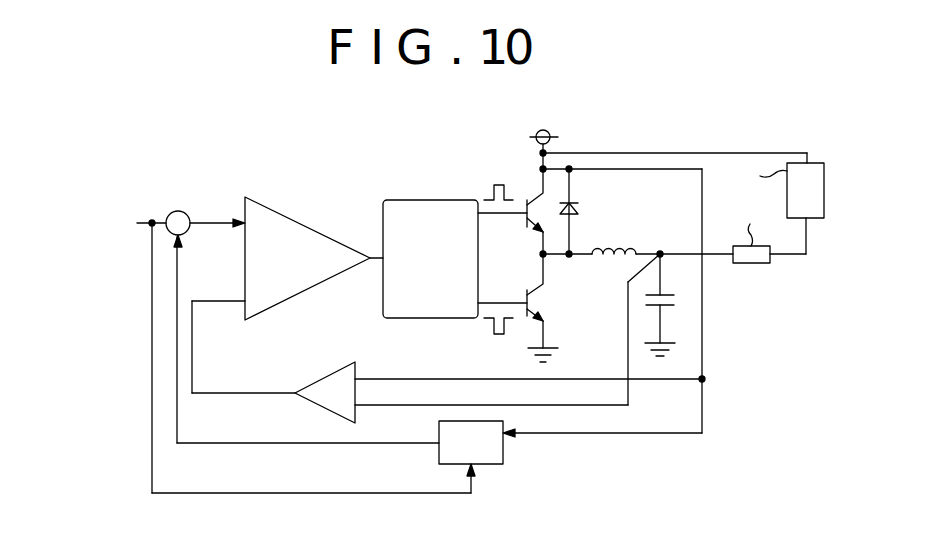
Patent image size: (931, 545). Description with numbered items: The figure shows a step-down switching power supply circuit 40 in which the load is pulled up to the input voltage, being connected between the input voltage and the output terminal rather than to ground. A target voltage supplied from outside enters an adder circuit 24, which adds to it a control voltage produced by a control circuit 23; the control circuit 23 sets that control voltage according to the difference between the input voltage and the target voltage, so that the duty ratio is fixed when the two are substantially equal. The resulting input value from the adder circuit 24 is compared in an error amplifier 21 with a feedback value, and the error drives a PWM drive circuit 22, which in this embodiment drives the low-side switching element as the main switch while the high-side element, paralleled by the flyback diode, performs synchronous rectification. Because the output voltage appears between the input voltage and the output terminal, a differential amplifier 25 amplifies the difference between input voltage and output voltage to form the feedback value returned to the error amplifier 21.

The step-down switching power supply circuit 40 is at (300, 125).
The adder circuit 24 is at (179, 210).
The error amplifier 21 is at (287, 212).
The PWM drive circuit 22 is at (431, 200).
The differential amplifier 25 is at (325, 378).
The control circuit 23 is at (489, 464).